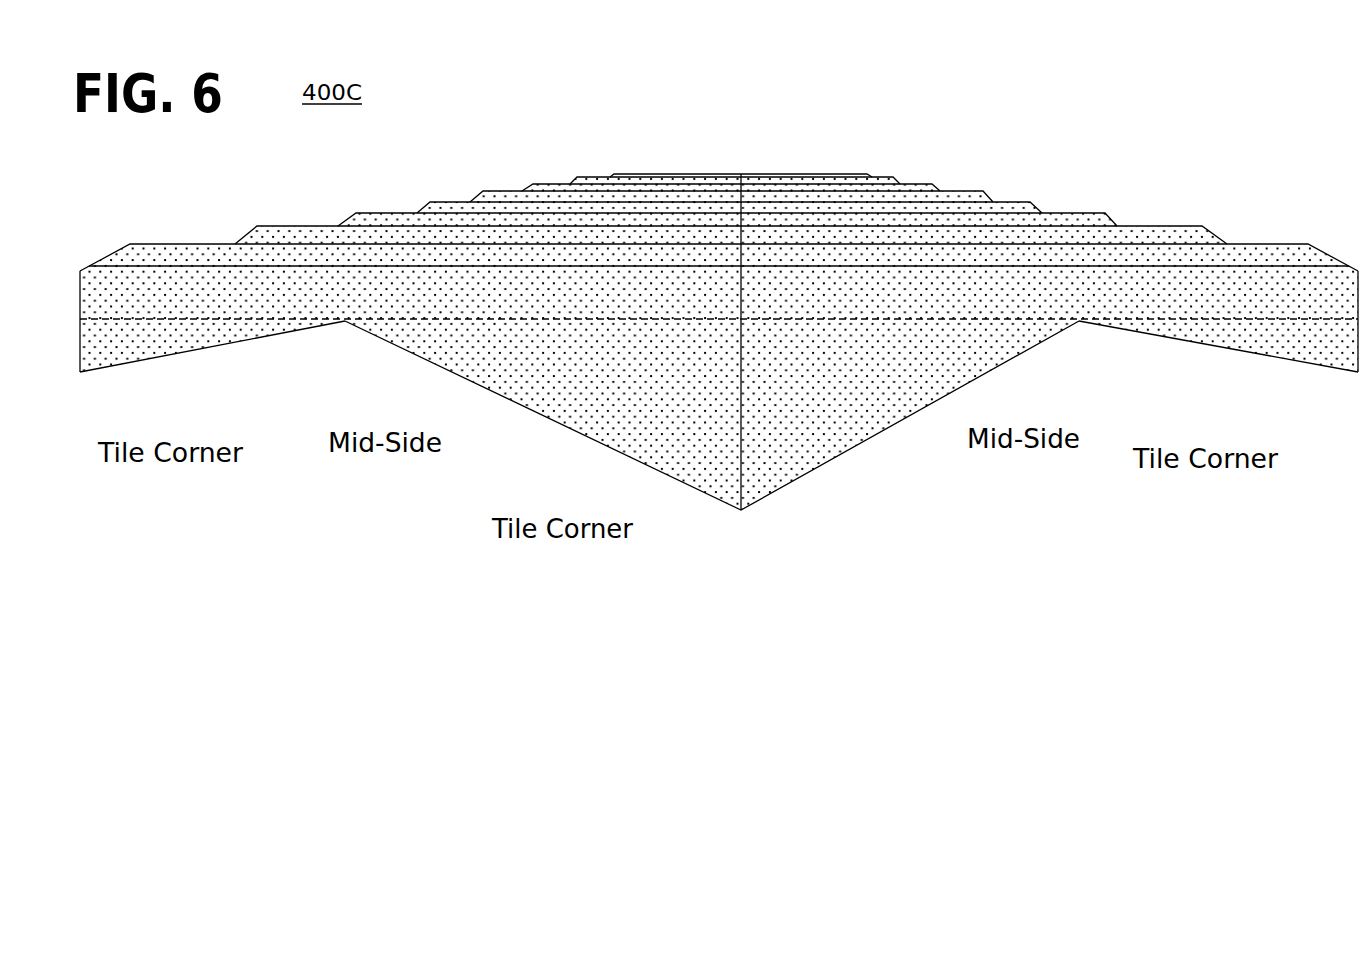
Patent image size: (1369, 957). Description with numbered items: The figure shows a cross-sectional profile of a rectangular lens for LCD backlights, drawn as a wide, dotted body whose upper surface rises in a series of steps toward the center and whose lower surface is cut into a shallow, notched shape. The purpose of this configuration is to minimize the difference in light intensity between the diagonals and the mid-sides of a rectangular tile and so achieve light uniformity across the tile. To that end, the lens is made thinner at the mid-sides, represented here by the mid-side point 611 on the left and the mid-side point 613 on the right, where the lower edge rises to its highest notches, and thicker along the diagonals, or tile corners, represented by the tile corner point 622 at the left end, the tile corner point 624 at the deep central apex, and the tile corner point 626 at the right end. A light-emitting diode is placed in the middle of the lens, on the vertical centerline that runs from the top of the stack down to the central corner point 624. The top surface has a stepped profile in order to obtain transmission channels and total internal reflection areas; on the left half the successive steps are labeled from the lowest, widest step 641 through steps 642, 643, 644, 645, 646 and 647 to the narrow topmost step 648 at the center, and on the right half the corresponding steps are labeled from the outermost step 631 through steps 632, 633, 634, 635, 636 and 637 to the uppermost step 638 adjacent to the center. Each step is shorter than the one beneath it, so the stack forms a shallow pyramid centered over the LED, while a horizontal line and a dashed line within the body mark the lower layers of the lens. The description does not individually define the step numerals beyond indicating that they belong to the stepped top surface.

The mid-side point 611 is at (345, 323).
The mid-side point 613 is at (1077, 324).
The tile corner point 622 is at (81, 332).
The tile corner point 624 is at (738, 460).
The tile corner point 626 is at (1356, 343).
The layer right portion 631 is at (1327, 253).
The layer right portion 632 is at (1218, 234).
The layer right portion 633 is at (1117, 222).
The layer right portion 634 is at (1041, 206).
The layer right portion 635 is at (993, 200).
The layer right portion 636 is at (940, 184).
The layer right portion 637 is at (897, 176).
The layer right portion 638 is at (864, 173).
The layer left portion 641 is at (167, 243).
The layer left portion 642 is at (291, 225).
The layer left portion 643 is at (380, 212).
The layer left portion 644 is at (446, 201).
The layer left portion 645 is at (497, 190).
The layer left portion 646 is at (549, 182).
The layer left portion 647 is at (592, 175).
The layer left portion 648 is at (695, 172).